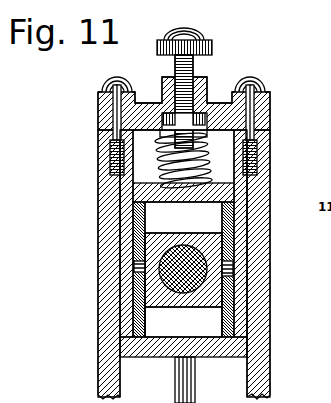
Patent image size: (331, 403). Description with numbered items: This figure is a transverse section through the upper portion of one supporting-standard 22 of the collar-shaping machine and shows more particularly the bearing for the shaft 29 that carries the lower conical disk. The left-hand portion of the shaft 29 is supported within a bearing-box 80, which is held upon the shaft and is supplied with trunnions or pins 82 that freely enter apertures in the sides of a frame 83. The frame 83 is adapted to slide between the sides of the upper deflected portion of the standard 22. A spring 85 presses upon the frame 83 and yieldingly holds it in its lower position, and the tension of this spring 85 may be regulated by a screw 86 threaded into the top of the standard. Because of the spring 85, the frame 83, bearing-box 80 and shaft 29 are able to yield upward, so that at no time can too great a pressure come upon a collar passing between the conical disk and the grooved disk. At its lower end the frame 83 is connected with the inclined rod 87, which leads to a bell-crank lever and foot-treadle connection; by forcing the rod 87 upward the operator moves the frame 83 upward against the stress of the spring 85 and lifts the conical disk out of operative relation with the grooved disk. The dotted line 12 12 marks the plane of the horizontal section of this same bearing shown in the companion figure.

The supporting-standard 22 is at (270, 358).
The frame 83 is at (133, 318).
The trunnions or pins 82 is at (138, 266).
The bearing-box 80 is at (158, 234).
The shaft 29 is at (169, 301).
The screw 86 is at (193, 66).
The spring 85 is at (192, 160).
The inclined rod 87 is at (195, 382).
The section line 12 12 is at (98, 269).